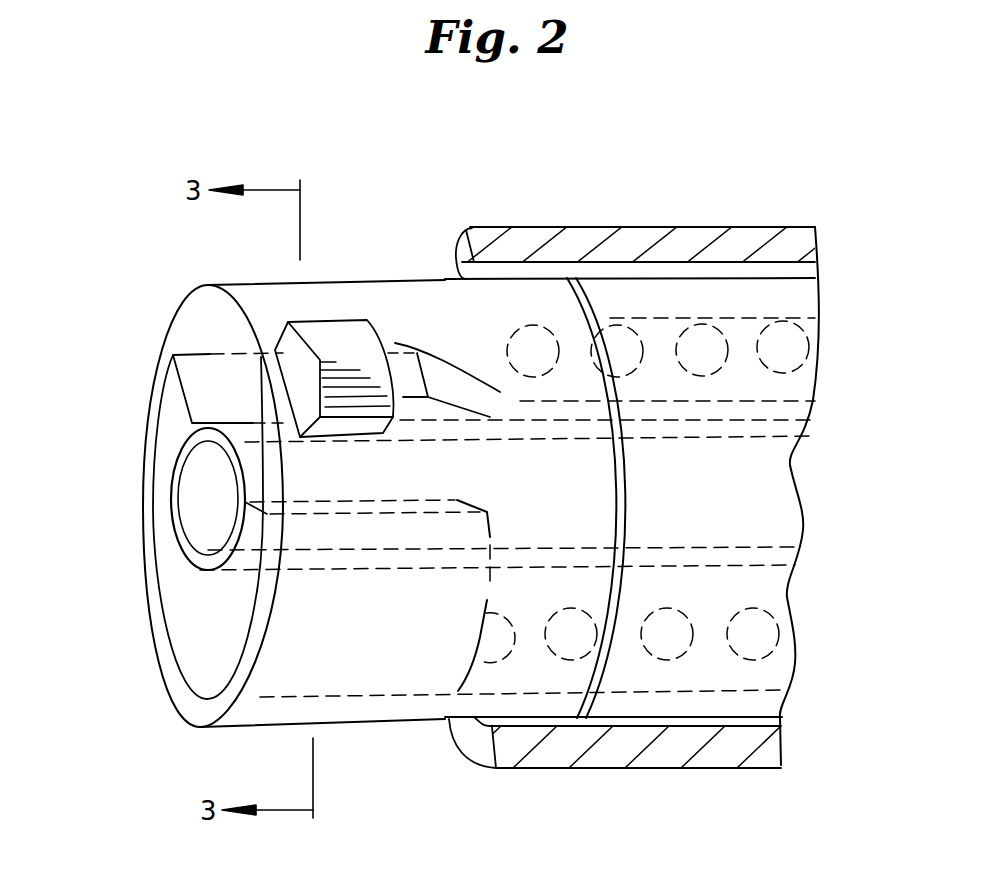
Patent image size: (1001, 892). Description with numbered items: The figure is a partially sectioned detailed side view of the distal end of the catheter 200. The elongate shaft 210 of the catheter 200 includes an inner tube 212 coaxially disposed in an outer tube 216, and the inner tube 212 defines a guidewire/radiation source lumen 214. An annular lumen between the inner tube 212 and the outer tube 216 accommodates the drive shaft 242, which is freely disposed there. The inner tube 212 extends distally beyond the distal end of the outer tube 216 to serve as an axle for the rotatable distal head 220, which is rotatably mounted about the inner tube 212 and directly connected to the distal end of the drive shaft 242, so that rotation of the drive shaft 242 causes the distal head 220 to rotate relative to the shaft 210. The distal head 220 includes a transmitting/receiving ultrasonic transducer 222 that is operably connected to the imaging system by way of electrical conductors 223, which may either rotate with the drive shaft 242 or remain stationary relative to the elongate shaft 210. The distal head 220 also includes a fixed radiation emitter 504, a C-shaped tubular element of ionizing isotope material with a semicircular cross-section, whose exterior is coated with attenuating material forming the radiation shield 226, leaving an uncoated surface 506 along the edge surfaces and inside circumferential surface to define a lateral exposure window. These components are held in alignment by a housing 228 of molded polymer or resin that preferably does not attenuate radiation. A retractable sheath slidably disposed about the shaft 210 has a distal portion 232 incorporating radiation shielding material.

The catheter 200 is at (780, 182).
The elongate shaft 210 is at (848, 333).
The inner tube 212 is at (183, 455).
The guidewire/radiation source lumen 214 is at (197, 515).
The outer tube 216 is at (673, 300).
The distal head 220 is at (392, 200).
The ultrasonic transducer 222 is at (341, 342).
The electrical conductors 223 is at (815, 401).
The radiation shield 226 is at (220, 642).
The housing 228 is at (458, 310).
The distal portion of retractable sheath 232 is at (681, 748).
The drive shaft 242 is at (775, 640).
The radiation emitter 504 is at (243, 360).
The uncoated surface 506 is at (227, 398).